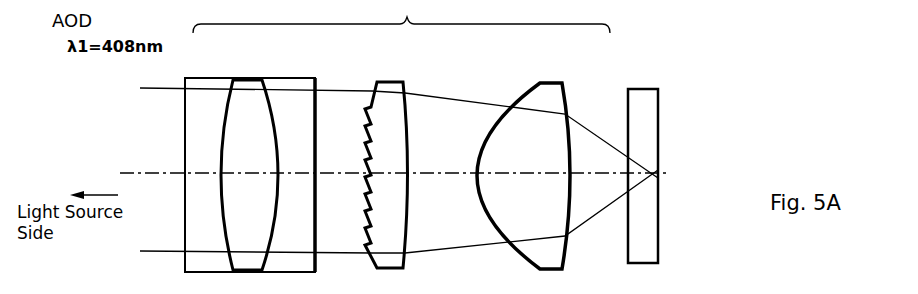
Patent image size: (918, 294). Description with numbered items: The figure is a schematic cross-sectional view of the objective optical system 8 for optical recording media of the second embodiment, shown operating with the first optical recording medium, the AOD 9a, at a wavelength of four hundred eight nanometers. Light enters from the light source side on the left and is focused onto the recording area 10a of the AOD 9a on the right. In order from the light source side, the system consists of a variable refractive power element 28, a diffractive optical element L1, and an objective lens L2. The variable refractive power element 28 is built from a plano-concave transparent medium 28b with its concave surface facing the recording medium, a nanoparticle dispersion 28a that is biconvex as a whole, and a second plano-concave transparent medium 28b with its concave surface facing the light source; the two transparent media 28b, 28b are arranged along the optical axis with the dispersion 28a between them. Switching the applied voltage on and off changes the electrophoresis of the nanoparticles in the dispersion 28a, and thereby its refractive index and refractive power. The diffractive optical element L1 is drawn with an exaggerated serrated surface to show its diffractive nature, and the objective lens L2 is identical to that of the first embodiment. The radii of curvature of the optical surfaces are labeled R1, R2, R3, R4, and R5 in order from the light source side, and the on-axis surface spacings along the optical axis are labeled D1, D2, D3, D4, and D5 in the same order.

The objective optical system 8 is at (401, 16).
The variable refractive power element 28 is at (265, 150).
The nanoparticle dispersion 28a is at (252, 80).
The transparent medium 28b is at (217, 78).
The diffractive optical element L1 is at (391, 82).
The objective lens L2 is at (546, 83).
The optical recording medium AOD 9a is at (680, 152).
The recording area 10a is at (660, 116).
The on-axis surface spacing D1 is at (388, 173).
The on-axis surface spacing D2 is at (462, 173).
The on-axis surface spacing D3 is at (533, 173).
The on-axis surface spacing D4 is at (595, 173).
The on-axis surface spacing D5 is at (643, 173).
The radius of curvature R1 is at (370, 173).
The radius of curvature R2 is at (411, 178).
The radius of curvature R3 is at (480, 180).
The radius of curvature R4 is at (572, 178).
The radius of curvature R5 is at (629, 222).